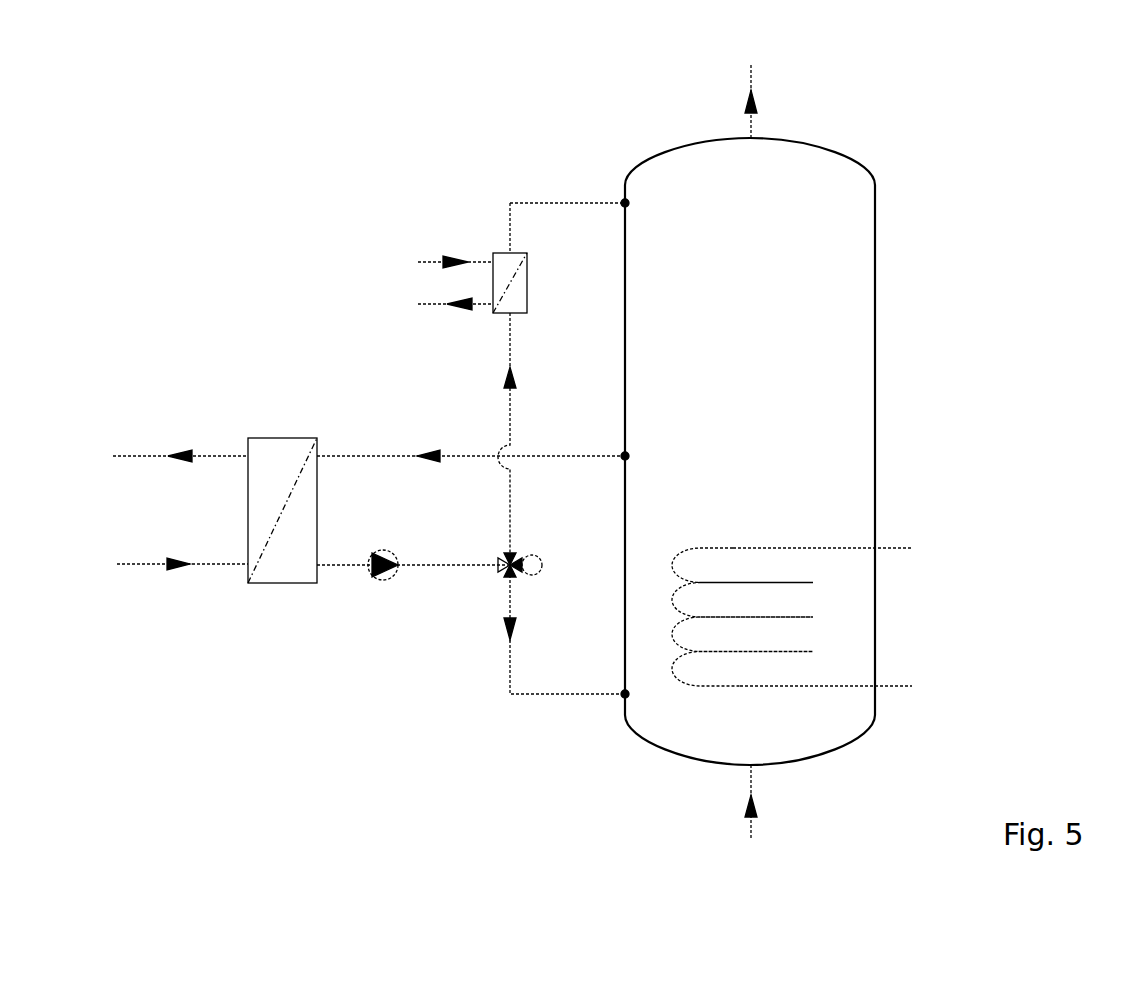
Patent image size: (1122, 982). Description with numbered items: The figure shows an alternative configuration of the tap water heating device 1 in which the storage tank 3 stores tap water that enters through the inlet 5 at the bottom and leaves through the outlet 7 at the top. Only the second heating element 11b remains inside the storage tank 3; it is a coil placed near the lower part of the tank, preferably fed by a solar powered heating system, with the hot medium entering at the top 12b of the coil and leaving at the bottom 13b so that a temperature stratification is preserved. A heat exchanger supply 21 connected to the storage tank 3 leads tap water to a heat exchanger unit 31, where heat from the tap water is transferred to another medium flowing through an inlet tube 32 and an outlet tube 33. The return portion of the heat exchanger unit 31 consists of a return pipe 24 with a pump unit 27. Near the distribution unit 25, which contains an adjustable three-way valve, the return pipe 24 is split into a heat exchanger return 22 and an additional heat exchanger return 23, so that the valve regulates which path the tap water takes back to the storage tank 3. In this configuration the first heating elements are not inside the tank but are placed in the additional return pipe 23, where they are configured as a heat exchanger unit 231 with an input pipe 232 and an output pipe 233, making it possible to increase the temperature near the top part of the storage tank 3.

The tap water heating device 1 is at (975, 231).
The storage tank 3 is at (692, 147).
The inlet 5 is at (748, 773).
The outlet 7 is at (748, 132).
The second heating element 11b is at (752, 580).
The coil inlet line 12b is at (886, 548).
The coil outlet line 13b is at (887, 683).
The heat exchanger supply 21 is at (563, 456).
The heat exchanger return 22 is at (560, 697).
The additional heat exchanger return 23 is at (452, 215).
The heat exchanger unit 231 is at (498, 282).
The input pipe 232 is at (433, 303).
The output pipe 233 is at (428, 262).
The return pipe 24 is at (453, 562).
The distribution unit 25 is at (507, 557).
The pump unit 27 is at (378, 578).
The heat exchanger unit 31 is at (282, 438).
The inlet tube 32 is at (158, 563).
The outlet tube 33 is at (165, 458).